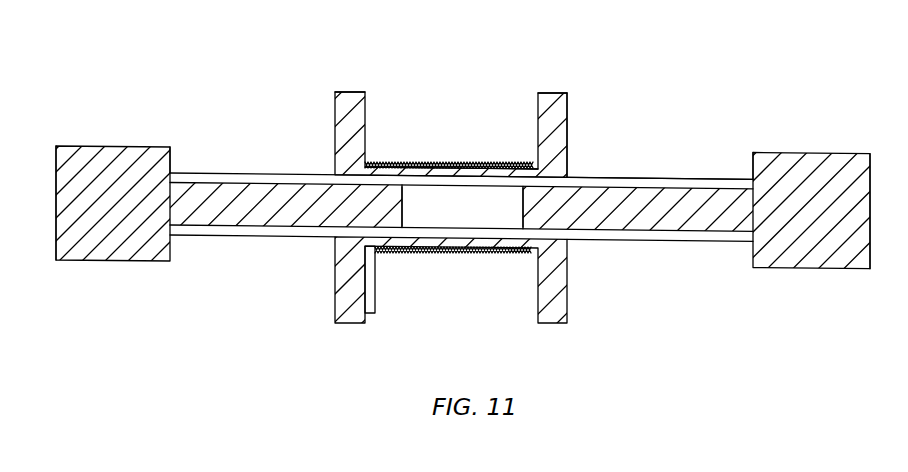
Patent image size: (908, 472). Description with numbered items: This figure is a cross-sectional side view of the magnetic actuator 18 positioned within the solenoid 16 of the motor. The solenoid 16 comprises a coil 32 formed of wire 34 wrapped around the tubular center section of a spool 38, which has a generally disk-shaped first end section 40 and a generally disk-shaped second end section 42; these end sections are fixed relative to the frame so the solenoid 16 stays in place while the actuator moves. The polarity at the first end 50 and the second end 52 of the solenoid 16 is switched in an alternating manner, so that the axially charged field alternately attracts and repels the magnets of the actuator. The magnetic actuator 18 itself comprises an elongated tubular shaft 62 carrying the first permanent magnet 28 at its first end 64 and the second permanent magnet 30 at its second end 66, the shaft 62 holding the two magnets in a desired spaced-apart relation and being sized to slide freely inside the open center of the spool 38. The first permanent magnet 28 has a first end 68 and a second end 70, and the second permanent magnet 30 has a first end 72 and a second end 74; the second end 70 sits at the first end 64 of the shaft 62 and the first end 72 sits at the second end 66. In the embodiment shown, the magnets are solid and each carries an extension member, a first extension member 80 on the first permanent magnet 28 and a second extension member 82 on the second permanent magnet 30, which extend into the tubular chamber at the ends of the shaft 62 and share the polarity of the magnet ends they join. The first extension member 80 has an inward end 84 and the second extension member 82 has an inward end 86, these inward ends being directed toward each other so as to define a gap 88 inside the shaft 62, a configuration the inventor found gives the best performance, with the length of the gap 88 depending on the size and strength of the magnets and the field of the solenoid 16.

The solenoid 16 is at (455, 142).
The magnetic actuator 18 is at (647, 160).
The first permanent magnet 28 is at (803, 252).
The second permanent magnet 30 is at (88, 243).
The coil 32 is at (393, 151).
The wire 34 is at (402, 253).
The spool 38 is at (569, 282).
The first end section 40 is at (565, 118).
The second end section 42 is at (330, 117).
The first end 50 is at (577, 83).
The second end 52 is at (352, 82).
The shaft 62 is at (220, 176).
The first end 64 is at (734, 246).
The second end 66 is at (177, 248).
The first end 68 is at (870, 142).
The second end 70 is at (766, 142).
The first end 72 is at (171, 136).
The second end 74 is at (67, 136).
The first extension member 80 is at (694, 205).
The second extension member 82 is at (262, 213).
The inward end 84 is at (532, 214).
The inward end 86 is at (393, 207).
The gap 88 is at (460, 216).